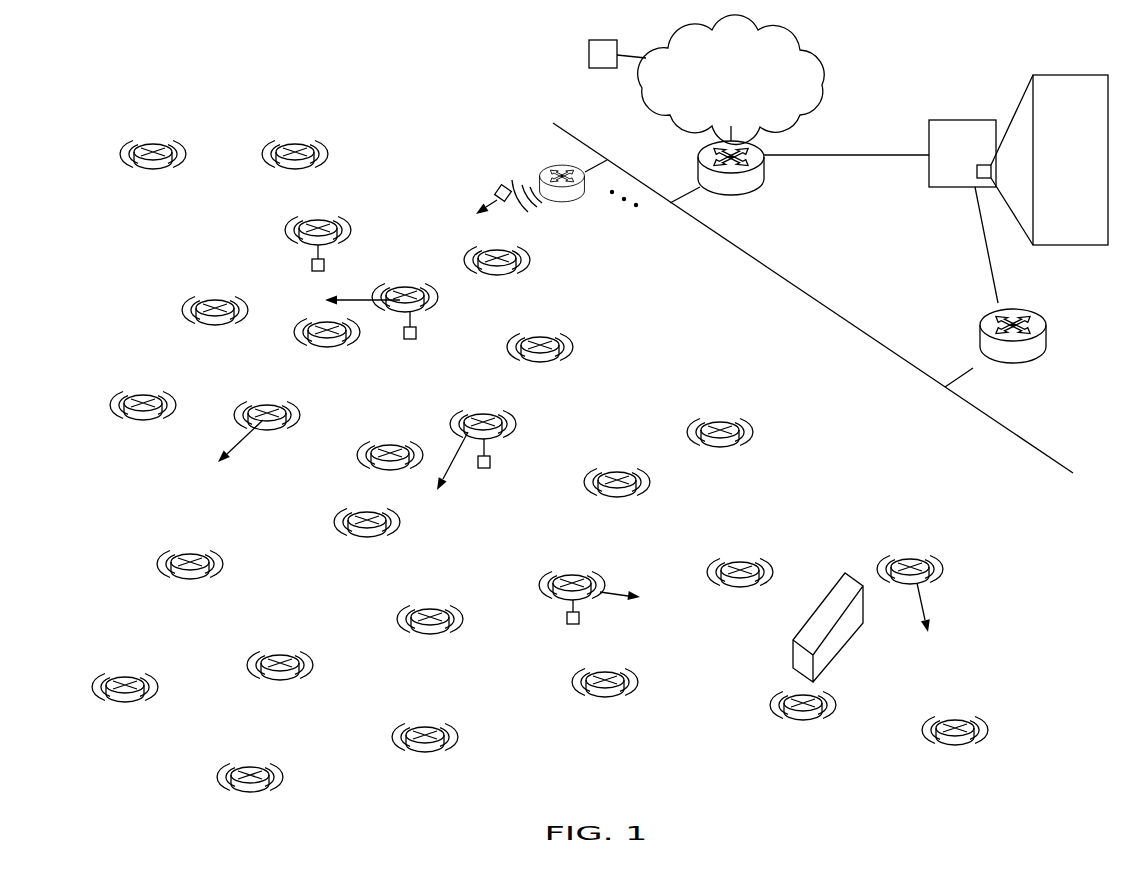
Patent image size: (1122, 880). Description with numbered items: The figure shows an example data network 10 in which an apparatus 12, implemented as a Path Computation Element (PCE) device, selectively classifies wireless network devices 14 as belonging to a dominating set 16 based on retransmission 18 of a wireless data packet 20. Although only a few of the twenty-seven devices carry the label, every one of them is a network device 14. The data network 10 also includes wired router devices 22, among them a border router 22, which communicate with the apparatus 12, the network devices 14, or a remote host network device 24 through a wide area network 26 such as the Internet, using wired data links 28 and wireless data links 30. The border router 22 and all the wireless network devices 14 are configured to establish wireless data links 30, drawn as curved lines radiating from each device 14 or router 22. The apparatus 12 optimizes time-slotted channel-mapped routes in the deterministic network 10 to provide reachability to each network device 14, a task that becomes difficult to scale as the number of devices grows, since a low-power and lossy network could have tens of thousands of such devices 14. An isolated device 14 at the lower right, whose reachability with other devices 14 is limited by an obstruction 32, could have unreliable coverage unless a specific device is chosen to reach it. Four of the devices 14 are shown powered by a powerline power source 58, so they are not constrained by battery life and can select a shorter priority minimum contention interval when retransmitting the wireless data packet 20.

The data network 10 is at (198, 84).
The apparatus 12 is at (940, 118).
The wireless network device 14 is at (155, 170).
The dominating set 16 is at (1057, 73).
The retransmission 18 is at (368, 305).
The wireless data packet 20 is at (503, 187).
The wired router device 22 is at (575, 198).
The remote host network device 24 is at (605, 70).
The wide area network 26 is at (825, 72).
The wired data link 28 is at (737, 137).
The wireless data link 30 is at (478, 240).
The obstruction 32 is at (822, 622).
The powerline power source 58 is at (312, 270).